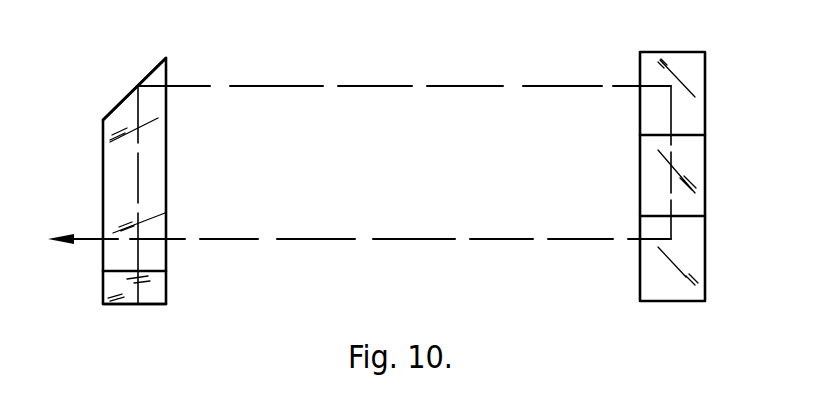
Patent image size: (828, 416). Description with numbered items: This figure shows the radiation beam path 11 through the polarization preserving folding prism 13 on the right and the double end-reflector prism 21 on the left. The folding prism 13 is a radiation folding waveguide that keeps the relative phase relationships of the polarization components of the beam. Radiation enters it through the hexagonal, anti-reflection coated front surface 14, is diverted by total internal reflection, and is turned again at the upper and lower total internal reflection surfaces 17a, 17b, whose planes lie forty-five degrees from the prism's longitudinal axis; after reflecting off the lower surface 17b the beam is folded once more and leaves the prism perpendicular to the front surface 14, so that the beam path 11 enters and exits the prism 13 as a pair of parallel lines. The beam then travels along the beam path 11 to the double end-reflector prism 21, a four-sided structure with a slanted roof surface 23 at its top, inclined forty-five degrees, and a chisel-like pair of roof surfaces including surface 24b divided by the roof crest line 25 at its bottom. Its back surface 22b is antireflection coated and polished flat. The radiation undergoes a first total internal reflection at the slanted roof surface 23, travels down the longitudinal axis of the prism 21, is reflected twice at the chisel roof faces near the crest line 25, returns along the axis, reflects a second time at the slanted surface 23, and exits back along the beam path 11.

The beam path 11 is at (490, 240).
The polarization preserving folding prism 13 is at (628, 45).
The anti-reflecting front surface 14 is at (640, 183).
The upper total internal reflection surface 17a is at (665, 290).
The lower total internal reflection surface 17b is at (673, 61).
The double end-reflector prism 21 is at (96, 130).
The back surface 22b is at (117, 197).
The slanted roof surface 23 is at (115, 107).
The roof surface 24b is at (155, 293).
The roof crest line 25 is at (117, 305).